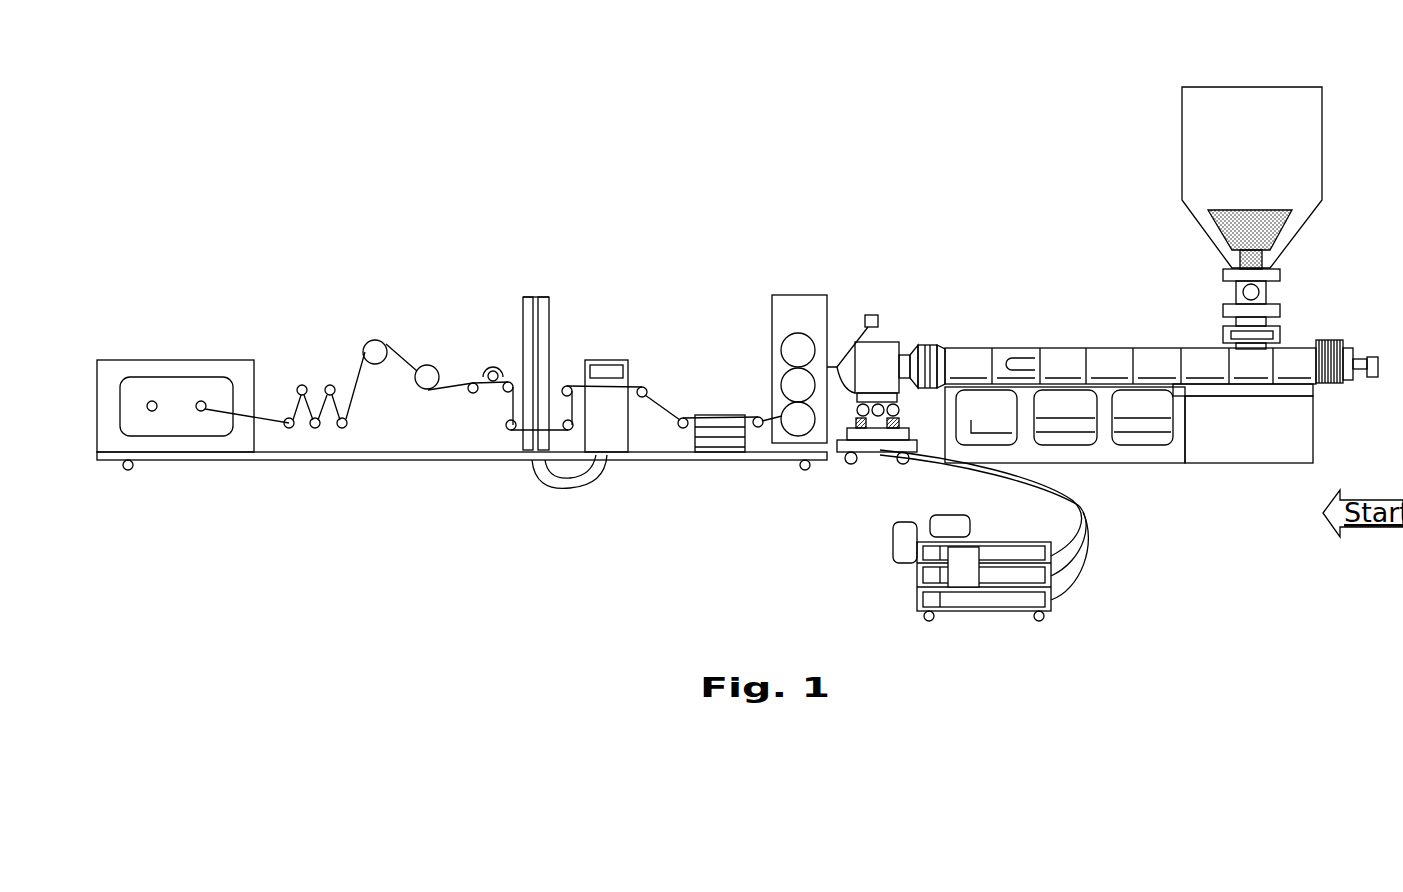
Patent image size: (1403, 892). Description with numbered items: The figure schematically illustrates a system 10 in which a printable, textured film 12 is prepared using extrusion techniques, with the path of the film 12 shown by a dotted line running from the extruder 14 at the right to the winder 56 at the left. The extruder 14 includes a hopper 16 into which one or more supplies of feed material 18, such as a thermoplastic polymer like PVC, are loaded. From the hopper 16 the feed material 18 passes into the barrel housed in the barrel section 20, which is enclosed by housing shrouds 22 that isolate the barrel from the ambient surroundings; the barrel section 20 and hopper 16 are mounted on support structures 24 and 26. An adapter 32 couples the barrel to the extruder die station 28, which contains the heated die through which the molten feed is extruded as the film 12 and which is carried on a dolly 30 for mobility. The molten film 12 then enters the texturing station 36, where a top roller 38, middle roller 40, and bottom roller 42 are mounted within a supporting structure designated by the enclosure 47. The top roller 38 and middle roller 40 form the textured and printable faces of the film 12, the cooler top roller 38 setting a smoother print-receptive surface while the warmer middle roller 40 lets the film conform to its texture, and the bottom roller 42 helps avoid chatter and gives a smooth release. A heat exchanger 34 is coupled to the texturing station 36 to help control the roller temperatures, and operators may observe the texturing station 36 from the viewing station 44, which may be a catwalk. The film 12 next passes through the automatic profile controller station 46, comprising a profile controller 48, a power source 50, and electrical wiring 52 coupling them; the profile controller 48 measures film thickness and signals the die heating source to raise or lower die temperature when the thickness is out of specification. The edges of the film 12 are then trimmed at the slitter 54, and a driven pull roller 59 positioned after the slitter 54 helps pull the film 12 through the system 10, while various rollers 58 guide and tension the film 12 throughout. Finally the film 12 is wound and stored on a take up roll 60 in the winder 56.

The system 10 is at (653, 104).
The film 12 is at (400, 363).
The extruder 14 is at (1175, 163).
The hopper 16 is at (1226, 103).
The feed material 18 is at (1243, 222).
The barrel section 20 is at (1099, 345).
The housing shrouds 22 is at (1093, 360).
The support structure 24 is at (1107, 446).
The support structure 26 is at (1232, 448).
The extruder die station 28 is at (882, 353).
The dolly 30 is at (872, 455).
The adapter 32 is at (923, 353).
The heat exchanger 34 is at (990, 612).
The texturing station 36 is at (790, 288).
The top roller 38 is at (792, 348).
The middle roller 40 is at (795, 385).
The bottom roller 42 is at (795, 418).
The viewing station 44 is at (715, 415).
The automatic profile controller station 46 is at (555, 316).
The enclosure 47 is at (772, 313).
The profile controller 48 is at (606, 360).
The power source 50 is at (543, 297).
The electrical wiring 52 is at (595, 483).
The slitter 54 is at (490, 364).
The winder 56 is at (222, 360).
The rollers 58 is at (330, 385).
The pull roller 59 is at (372, 340).
The take up roll 60 is at (201, 412).